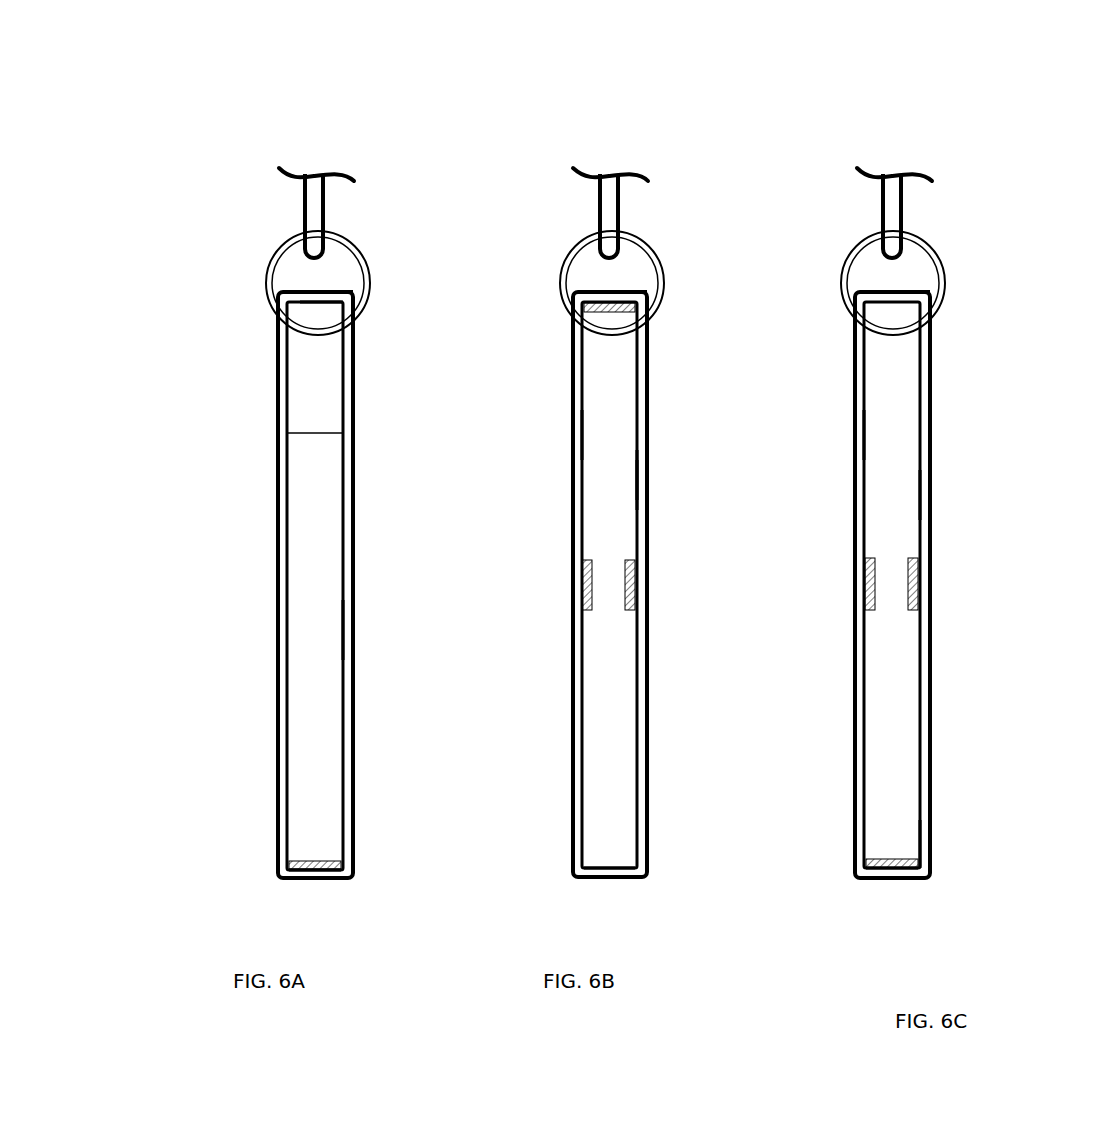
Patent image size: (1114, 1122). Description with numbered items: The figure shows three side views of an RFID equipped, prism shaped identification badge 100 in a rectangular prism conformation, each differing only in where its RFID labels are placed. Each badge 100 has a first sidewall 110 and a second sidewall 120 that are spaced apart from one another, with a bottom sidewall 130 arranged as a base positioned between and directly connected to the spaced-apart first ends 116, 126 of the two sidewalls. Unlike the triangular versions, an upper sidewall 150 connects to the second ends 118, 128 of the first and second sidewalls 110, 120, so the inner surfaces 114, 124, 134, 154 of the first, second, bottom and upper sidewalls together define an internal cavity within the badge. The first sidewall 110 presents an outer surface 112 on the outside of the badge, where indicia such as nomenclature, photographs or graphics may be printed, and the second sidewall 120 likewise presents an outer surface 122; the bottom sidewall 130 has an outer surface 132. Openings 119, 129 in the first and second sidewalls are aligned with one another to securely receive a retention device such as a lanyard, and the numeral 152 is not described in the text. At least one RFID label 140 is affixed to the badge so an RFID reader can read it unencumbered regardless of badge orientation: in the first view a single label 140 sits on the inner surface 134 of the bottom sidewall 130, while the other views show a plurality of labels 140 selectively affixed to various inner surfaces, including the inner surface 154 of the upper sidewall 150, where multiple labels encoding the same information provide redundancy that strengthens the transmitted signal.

In FIG. 6A, the RFID equipped, prism shaped identification badge 100 is at (90, 233).
In FIG. 6B, the RFID equipped, prism shaped identification badge 100 is at (528, 188).
In FIG. 6C, the RFID equipped, prism shaped identification badge 100 is at (785, 172).
In FIG. 6A, the first sidewall 110 is at (277, 495).
In FIG. 6B, the first sidewall 110 is at (572, 768).
In FIG. 6C, the first sidewall 110 is at (857, 440).
In FIG. 6A, the outer surface of first sidewall 112 is at (277, 571).
In FIG. 6B, the outer surface of first sidewall 112 is at (572, 677).
In FIG. 6C, the outer surface of first sidewall 112 is at (857, 475).
In FIG. 6A, the inner surface of first sidewall 114 is at (343, 433).
In FIG. 6B, the inner surface of first sidewall 114 is at (585, 432).
In FIG. 6C, the inner surface of first sidewall 114 is at (920, 495).
In FIG. 6A, the first end of first sidewall 116 is at (277, 799).
In FIG. 6B, the first end of first sidewall 116 is at (573, 838).
In FIG. 6C, the first end of first sidewall 116 is at (857, 835).
In FIG. 6A, the second end of first sidewall 118 is at (278, 352).
In FIG. 6B, the second end of first sidewall 118 is at (572, 385).
In FIG. 6C, the second end of first sidewall 118 is at (855, 385).
In FIG. 6A, the opening of first sidewall 119 is at (278, 320).
In FIG. 6B, the opening of first sidewall 119 is at (572, 314).
In FIG. 6C, the opening of first sidewall 119 is at (855, 314).
In FIG. 6A, the second sidewall 120 is at (355, 513).
In FIG. 6B, the second sidewall 120 is at (647, 720).
In FIG. 6C, the second sidewall 120 is at (930, 322).
In FIG. 6A, the outer surface of second sidewall 122 is at (355, 668).
In FIG. 6B, the outer surface of second sidewall 122 is at (627, 480).
In FIG. 6C, the outer surface of second sidewall 122 is at (930, 548).
In FIG. 6A, the inner surface of second sidewall 124 is at (340, 633).
In FIG. 6B, the inner surface of second sidewall 124 is at (636, 475).
In FIG. 6C, the inner surface of second sidewall 124 is at (865, 432).
In FIG. 6A, the first end of second sidewall 126 is at (355, 797).
In FIG. 6B, the first end of second sidewall 126 is at (647, 820).
In FIG. 6C, the first end of second sidewall 126 is at (918, 856).
In FIG. 6A, the second end of second sidewall 128 is at (338, 315).
In FIG. 6B, the second end of second sidewall 128 is at (647, 395).
In FIG. 6C, the second end of second sidewall 128 is at (930, 378).
In FIG. 6A, the opening of second sidewall 129 is at (351, 322).
In FIG. 6B, the opening of second sidewall 129 is at (647, 320).
In FIG. 6C, the opening of second sidewall 129 is at (930, 322).
In FIG. 6A, the bottom sidewall 130 is at (278, 873).
In FIG. 6B, the bottom sidewall 130 is at (578, 877).
In FIG. 6C, the bottom sidewall 130 is at (873, 880).
In FIG. 6A, the outer surface of bottom sidewall 132 is at (322, 878).
In FIG. 6B, the outer surface of bottom sidewall 132 is at (617, 878).
In FIG. 6C, the outer surface of bottom sidewall 132 is at (905, 880).
In FIG. 6A, the inner surface of bottom sidewall 134 is at (322, 862).
In FIG. 6B, the inner surface of bottom sidewall 134 is at (615, 865).
In FIG. 6C, the inner surface of bottom sidewall 134 is at (920, 862).
In FIG. 6A, the RFID label 140 is at (290, 862).
In FIG. 6B, the RFID label 140 is at (640, 314).
In FIG. 6C, the RFID label 140 is at (870, 585).
In FIG. 6A, the upper sidewall 150 is at (298, 292).
In FIG. 6B, the upper sidewall 150 is at (575, 292).
In FIG. 6C, the upper sidewall 150 is at (857, 292).
In FIG. 6A, the hook 152 is at (325, 289).
In FIG. 6B, the hook 152 is at (618, 292).
In FIG. 6C, the hook 152 is at (905, 292).
In FIG. 6A, the inner surface of upper sidewall 154 is at (351, 324).
In FIG. 6B, the inner surface of upper sidewall 154 is at (643, 322).
In FIG. 6C, the inner surface of upper sidewall 154 is at (928, 322).